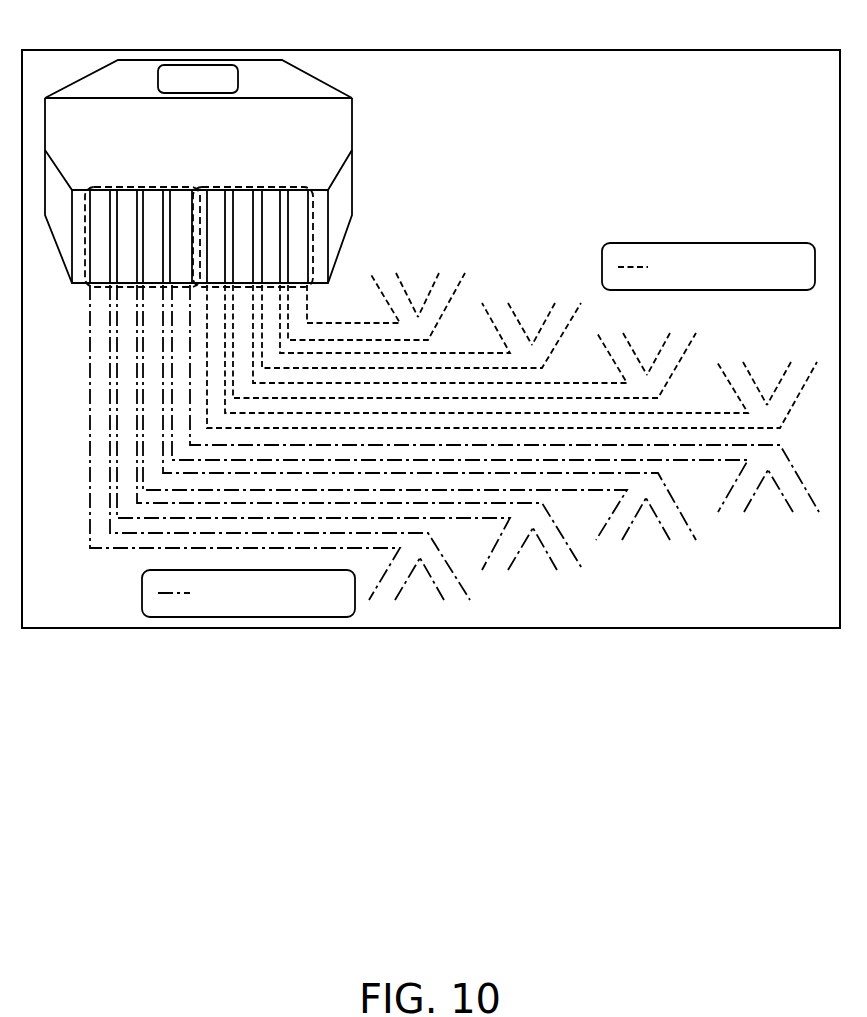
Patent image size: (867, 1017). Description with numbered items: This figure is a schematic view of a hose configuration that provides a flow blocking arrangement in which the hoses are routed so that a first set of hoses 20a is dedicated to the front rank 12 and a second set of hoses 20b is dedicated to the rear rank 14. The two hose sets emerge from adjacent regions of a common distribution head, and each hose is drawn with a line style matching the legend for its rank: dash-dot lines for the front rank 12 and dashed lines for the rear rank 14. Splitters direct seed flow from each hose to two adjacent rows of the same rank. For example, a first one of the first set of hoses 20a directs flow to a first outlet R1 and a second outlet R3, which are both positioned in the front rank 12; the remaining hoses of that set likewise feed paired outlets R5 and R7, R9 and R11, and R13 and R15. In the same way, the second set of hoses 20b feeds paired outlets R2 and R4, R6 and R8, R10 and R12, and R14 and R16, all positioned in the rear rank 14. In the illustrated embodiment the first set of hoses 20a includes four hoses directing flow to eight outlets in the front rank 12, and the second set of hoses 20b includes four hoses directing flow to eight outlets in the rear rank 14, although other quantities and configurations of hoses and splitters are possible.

The first set of hoses 20a is at (118, 181).
The second set of hoses 20b is at (278, 181).
The front rank 12 is at (248, 593).
The rear rank 14 is at (708, 266).
The first outlet R1 is at (255, 458).
The outlet R2 is at (362, 284).
The second outlet R3 is at (291, 458).
The outlet R4 is at (378, 293).
The outlet R5 is at (325, 443).
The outlet R6 is at (406, 314).
The outlet R7 is at (361, 443).
The outlet R8 is at (423, 322).
The outlet R9 is at (394, 428).
The outlet R10 is at (450, 334).
The outlet R11 is at (435, 428).
The outlet R12 is at (470, 341).
The outlet R13 is at (470, 414).
The outlet R14 is at (496, 349).
The outlet R15 is at (510, 414).
The outlet R16 is at (517, 356).